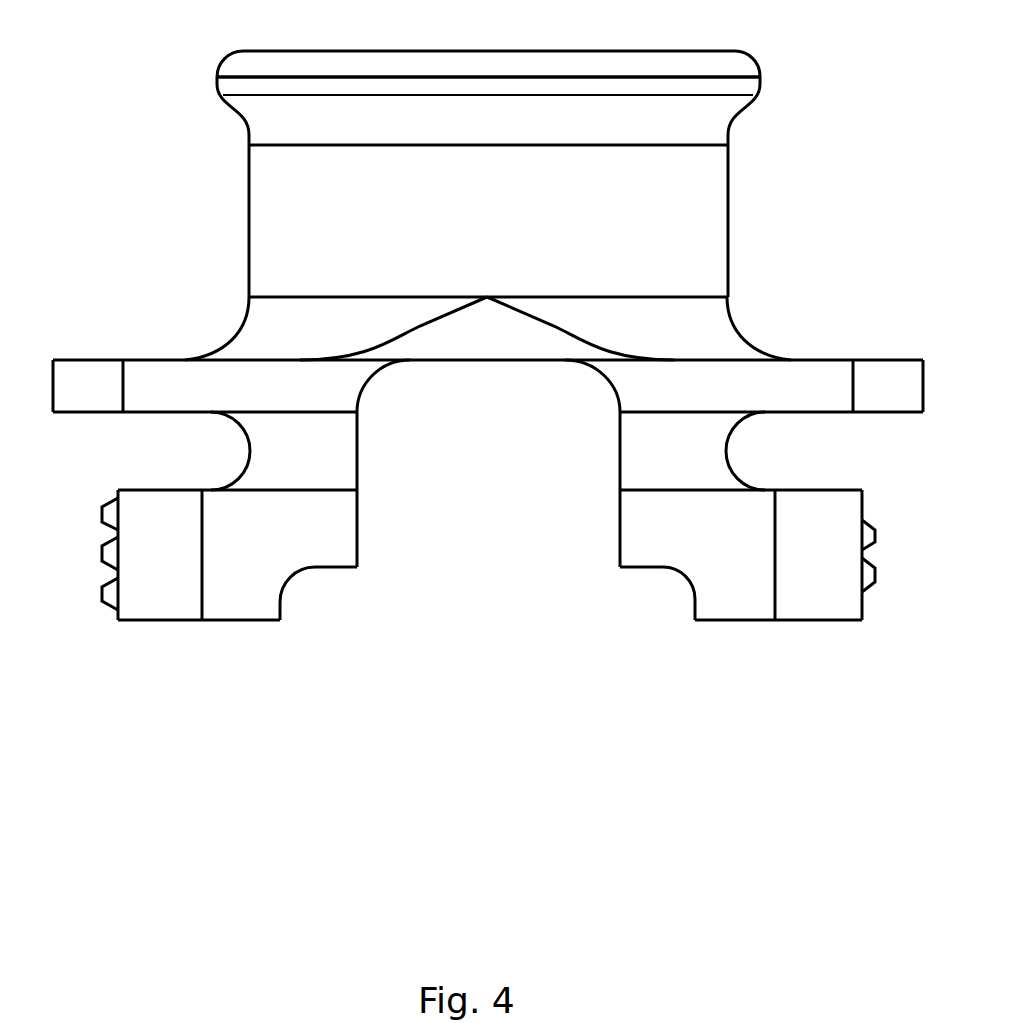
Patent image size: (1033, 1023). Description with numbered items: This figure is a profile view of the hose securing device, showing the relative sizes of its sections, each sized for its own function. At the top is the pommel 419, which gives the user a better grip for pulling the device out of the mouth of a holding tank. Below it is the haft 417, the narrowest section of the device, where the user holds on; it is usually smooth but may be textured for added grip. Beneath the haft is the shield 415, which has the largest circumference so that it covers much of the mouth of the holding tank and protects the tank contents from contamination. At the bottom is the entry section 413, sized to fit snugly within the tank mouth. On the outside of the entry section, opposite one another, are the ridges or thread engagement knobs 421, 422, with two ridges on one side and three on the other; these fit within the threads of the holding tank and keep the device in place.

The entry section 413 is at (290, 607).
The shield 415 is at (902, 368).
The haft 417 is at (254, 200).
The pommel 419 is at (226, 64).
The ridges (thread engagement knobs) 421 is at (877, 535).
The ridges (thread engagement knobs) 422 is at (104, 508).